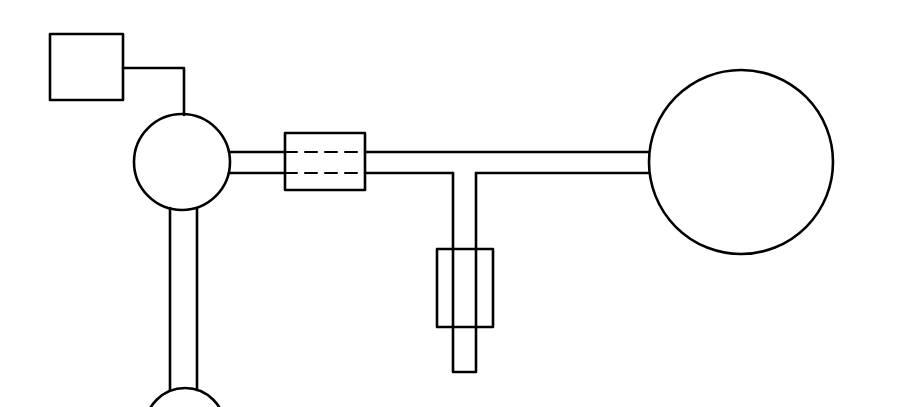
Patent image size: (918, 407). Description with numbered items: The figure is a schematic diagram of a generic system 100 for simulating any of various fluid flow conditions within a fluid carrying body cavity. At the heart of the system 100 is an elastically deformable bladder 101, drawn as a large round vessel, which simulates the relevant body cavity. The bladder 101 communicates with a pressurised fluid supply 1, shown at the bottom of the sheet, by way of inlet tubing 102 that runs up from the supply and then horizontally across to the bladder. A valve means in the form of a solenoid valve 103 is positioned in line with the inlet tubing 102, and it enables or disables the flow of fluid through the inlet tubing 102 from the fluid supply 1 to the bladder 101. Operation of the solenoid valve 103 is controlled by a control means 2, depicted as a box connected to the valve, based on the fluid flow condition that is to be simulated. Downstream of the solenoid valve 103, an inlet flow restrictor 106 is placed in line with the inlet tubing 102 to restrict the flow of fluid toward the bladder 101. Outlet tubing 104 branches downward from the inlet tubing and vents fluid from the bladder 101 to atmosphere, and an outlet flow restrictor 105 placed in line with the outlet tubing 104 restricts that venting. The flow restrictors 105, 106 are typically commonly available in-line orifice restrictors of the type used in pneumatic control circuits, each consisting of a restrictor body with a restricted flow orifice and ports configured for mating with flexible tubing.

The system 100 is at (356, 85).
The elastically deformable bladder 101 is at (718, 72).
The inlet tubing 102 is at (413, 152).
The solenoid valve 103 is at (146, 198).
The outlet tubing 104 is at (476, 225).
The outlet flow restrictor 105 is at (437, 283).
The inlet flow restrictor 106 is at (327, 190).
The pressurised fluid supply 1 is at (150, 392).
The control means 2 is at (78, 100).